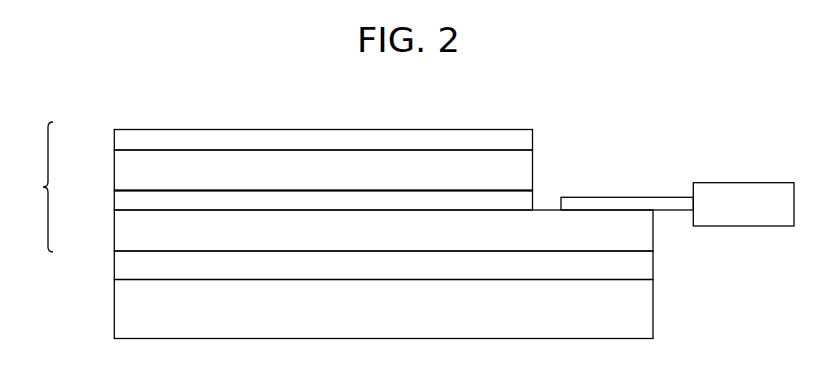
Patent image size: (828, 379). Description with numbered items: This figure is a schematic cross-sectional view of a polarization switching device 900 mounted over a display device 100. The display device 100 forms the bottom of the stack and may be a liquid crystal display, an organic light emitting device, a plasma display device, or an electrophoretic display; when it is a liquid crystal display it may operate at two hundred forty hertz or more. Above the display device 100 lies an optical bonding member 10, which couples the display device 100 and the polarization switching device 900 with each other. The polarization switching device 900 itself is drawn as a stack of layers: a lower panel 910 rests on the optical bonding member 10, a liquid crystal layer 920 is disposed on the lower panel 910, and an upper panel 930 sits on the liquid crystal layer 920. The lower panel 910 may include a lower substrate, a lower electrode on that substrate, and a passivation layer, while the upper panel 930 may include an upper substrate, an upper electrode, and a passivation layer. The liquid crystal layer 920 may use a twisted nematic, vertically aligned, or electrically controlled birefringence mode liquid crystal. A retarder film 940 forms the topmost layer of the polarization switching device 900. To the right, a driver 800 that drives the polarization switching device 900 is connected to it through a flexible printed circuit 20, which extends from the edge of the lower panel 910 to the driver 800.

The polarization switching device 900 is at (29, 187).
The retarder film 940 is at (123, 140).
The upper panel 930 is at (123, 171).
The liquid crystal layer 920 is at (123, 201).
The lower panel 910 is at (123, 235).
The optical bonding member 10 is at (123, 266).
The display device 100 is at (123, 315).
The flexible printed circuit 20 is at (598, 197).
The driver 800 is at (713, 182).